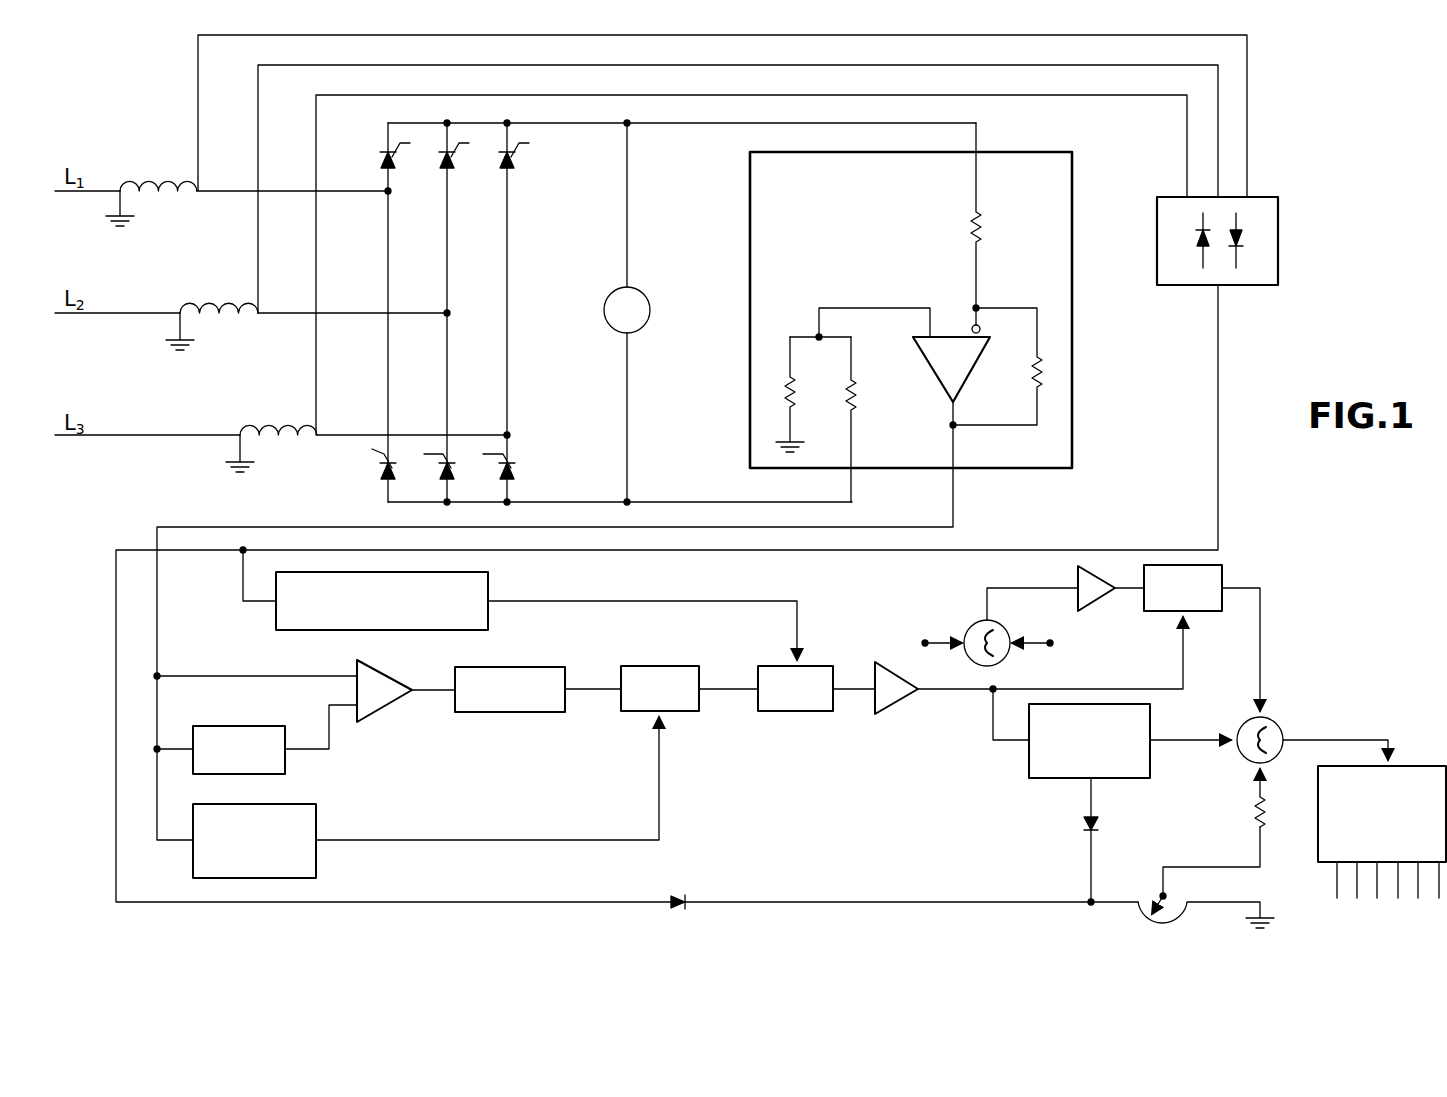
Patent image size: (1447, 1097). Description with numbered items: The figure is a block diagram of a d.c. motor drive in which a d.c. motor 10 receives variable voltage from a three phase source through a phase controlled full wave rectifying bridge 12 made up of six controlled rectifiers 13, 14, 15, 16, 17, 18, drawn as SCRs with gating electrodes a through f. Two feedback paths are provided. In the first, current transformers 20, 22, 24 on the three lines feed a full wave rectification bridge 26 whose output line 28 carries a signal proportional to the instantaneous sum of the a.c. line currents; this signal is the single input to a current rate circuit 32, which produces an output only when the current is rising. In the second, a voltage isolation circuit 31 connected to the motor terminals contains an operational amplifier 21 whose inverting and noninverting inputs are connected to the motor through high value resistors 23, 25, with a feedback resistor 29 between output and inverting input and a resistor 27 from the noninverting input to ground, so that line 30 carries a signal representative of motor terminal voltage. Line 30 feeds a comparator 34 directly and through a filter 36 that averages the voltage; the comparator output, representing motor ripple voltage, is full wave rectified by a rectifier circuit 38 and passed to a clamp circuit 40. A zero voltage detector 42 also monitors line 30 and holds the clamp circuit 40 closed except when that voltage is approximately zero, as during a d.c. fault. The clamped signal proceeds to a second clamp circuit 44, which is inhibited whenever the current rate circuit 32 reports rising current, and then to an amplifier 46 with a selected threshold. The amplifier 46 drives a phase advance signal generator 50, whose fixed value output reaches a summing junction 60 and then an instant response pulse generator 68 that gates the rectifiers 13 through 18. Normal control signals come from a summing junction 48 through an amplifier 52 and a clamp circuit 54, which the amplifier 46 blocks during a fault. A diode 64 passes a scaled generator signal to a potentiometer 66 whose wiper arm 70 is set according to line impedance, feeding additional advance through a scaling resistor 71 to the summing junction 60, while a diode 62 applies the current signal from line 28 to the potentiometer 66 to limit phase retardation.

The d.c. motor 10 is at (650, 297).
The full wave rectifying bridge 12 is at (486, 259).
The controlled rectifier 13 is at (412, 169).
The controlled rectifier 14 is at (471, 169).
The controlled rectifier 15 is at (531, 169).
The controlled rectifier 16 is at (397, 477).
The controlled rectifier 17 is at (456, 477).
The controlled rectifier 18 is at (516, 477).
The current transformer 20 is at (150, 180).
The operational amplifier 21 is at (932, 383).
The current transformer 22 is at (210, 306).
The resistor 23 is at (988, 230).
The current transformer 24 is at (274, 431).
The resistor 25 is at (858, 387).
The full wave rectification bridge 26 is at (1280, 240).
The resistor 27 is at (800, 385).
The output line 28 is at (1223, 380).
The resistor 29 is at (1030, 375).
The line 30 is at (955, 515).
The voltage isolation circuit 31 is at (1073, 380).
The current rate circuit 32 is at (492, 588).
The comparator 34 is at (390, 673).
The filter 36 is at (268, 725).
The rectifier circuit 38 is at (543, 654).
The clamp circuit 40 is at (670, 665).
The zero voltage detector 42 is at (318, 808).
The clamp circuit 44 is at (826, 665).
The amplifier 46 is at (905, 703).
The summing junction 48 is at (968, 623).
The phase advance signal generator 50 is at (1028, 770).
The amplifier 52 is at (1098, 604).
The clamp circuit 54 is at (1224, 572).
The summing junction 60 is at (1278, 722).
The diode 62 is at (680, 892).
The diode 64 is at (1078, 822).
The potentiometer 66 is at (1138, 906).
The instant response pulse generator 68 is at (1410, 762).
The wiper arm 70 is at (1150, 895).
The scaling resistor 71 is at (1250, 812).